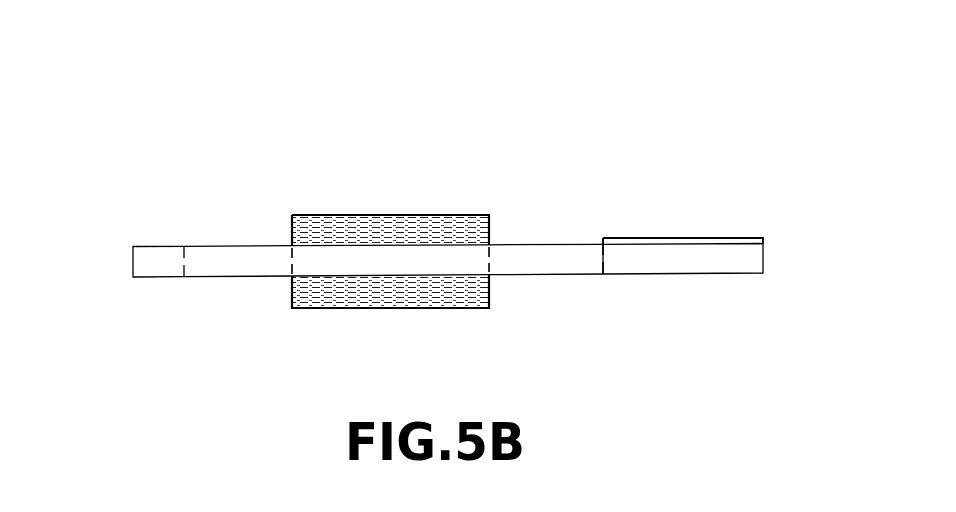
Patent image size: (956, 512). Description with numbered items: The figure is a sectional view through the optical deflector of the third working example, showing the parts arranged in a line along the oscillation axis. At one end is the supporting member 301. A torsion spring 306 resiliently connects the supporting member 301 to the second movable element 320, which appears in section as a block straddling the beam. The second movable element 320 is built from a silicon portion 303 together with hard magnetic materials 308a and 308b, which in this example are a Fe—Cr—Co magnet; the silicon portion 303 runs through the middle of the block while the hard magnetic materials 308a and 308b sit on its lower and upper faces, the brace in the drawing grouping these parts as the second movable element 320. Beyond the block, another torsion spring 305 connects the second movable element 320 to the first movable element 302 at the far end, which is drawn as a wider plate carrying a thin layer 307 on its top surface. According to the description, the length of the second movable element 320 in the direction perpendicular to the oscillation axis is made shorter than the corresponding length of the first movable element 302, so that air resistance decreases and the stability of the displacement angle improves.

The supporting member 301 is at (158, 253).
The first movable element 302 is at (705, 262).
The silicon portion 303 is at (463, 253).
The torsion spring 305 is at (548, 263).
The torsion spring 306 is at (237, 260).
The thin layer on end portion 307 is at (733, 237).
The hard magnetic material 308a is at (358, 283).
The hard magnetic material 308b is at (413, 218).
The second movable element 320 is at (538, 128).